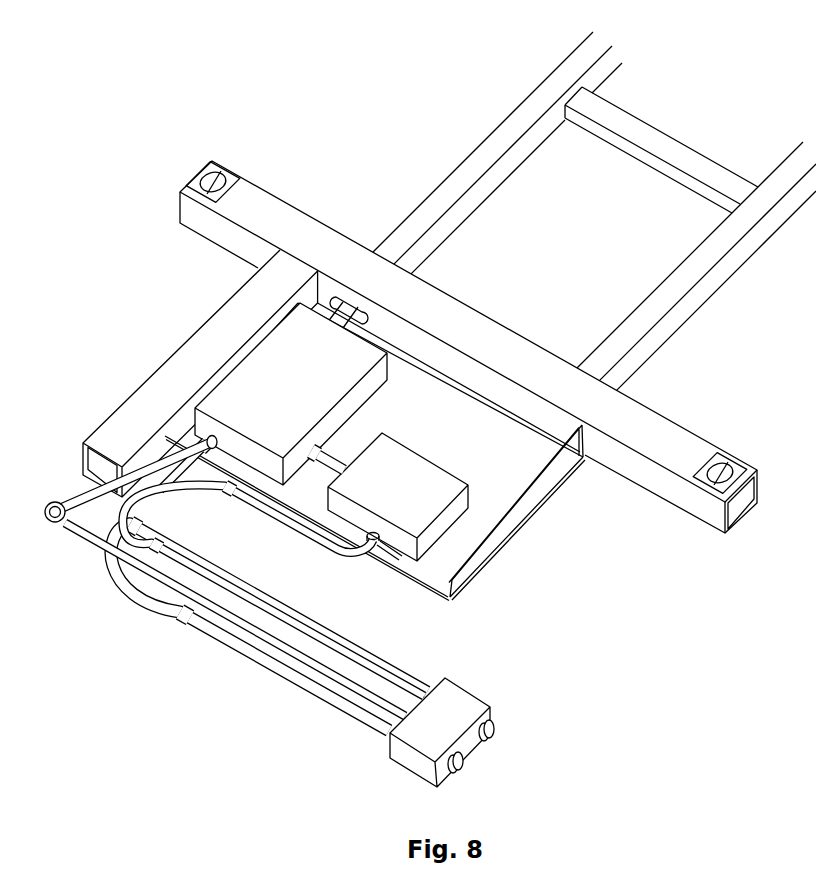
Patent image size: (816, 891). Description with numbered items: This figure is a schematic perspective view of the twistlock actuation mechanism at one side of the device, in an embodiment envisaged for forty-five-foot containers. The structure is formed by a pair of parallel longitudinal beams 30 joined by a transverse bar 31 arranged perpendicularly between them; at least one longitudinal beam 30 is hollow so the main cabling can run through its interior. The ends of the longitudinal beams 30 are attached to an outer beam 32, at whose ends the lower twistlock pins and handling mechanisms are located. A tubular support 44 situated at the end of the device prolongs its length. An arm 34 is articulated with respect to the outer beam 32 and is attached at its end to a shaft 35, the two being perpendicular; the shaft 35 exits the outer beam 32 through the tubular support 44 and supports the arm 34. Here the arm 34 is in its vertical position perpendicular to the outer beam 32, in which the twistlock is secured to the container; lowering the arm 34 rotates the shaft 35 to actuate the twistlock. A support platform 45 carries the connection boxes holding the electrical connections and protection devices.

The longitudinal beams 30 is at (652, 340).
The transverse bar 31 is at (658, 145).
The outer beam 32 is at (318, 248).
The arm 34 is at (233, 608).
The shaft 35 is at (83, 488).
The tubular support 44 is at (202, 358).
The support platform 45 is at (462, 542).